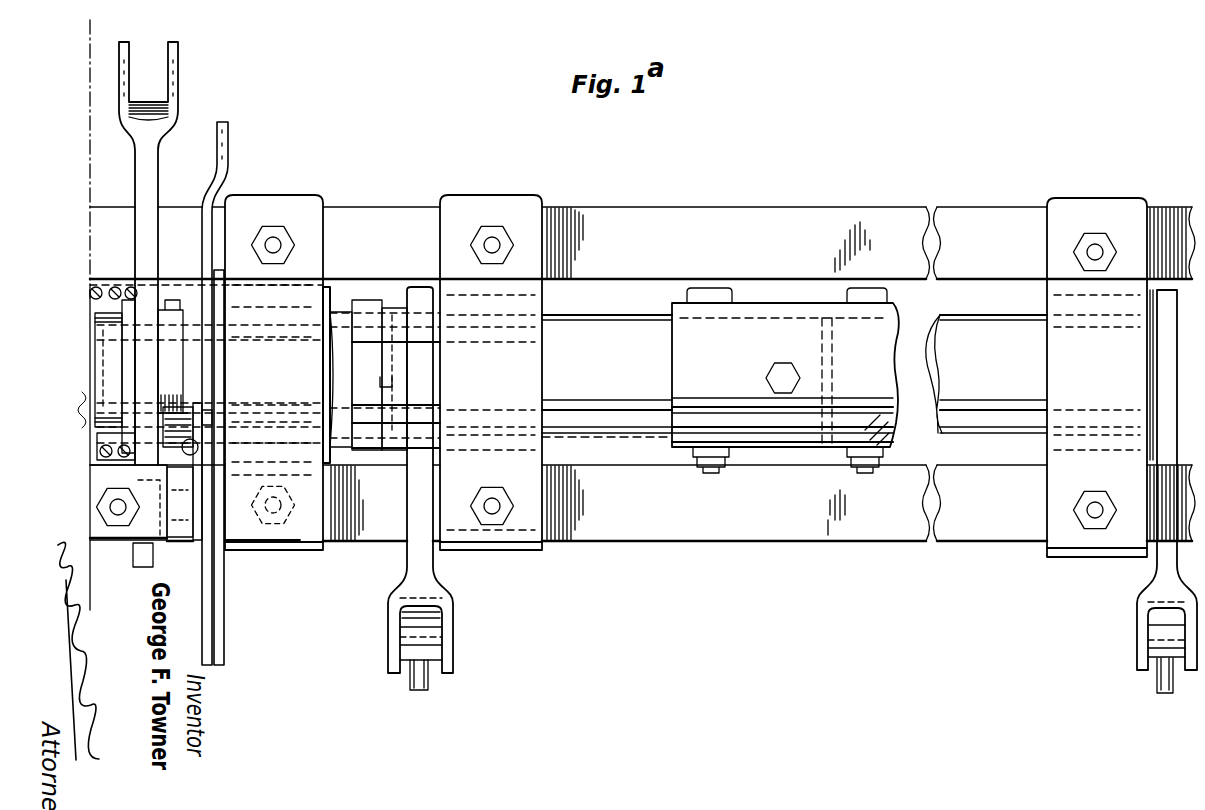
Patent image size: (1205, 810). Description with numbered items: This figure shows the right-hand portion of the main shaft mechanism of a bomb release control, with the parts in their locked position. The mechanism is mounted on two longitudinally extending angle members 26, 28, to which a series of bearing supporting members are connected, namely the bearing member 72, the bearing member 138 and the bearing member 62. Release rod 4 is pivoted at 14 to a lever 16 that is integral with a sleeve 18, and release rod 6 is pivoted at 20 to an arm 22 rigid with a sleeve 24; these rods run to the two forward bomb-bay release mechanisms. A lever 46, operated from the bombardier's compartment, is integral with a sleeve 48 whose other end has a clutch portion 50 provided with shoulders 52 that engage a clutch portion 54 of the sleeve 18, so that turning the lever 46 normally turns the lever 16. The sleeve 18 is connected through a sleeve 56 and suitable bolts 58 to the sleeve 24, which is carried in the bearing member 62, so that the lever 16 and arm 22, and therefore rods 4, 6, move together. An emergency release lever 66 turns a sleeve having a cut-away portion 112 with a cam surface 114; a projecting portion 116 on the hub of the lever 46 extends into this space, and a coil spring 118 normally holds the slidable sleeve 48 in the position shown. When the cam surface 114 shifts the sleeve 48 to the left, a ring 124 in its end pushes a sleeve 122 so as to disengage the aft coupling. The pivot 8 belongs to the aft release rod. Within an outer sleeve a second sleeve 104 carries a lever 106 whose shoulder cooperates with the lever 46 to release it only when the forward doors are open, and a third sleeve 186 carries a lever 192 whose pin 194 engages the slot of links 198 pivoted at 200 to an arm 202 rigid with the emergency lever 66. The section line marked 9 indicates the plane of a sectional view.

The release rod 4 is at (418, 678).
The release rod 6 is at (1158, 682).
The pivot 8 is at (275, 381).
The section line 9 is at (495, 381).
The pivot 14 is at (447, 642).
The lever 16 is at (415, 558).
The sleeve 18 is at (613, 333).
The pivot 20 is at (1148, 650).
The arm 22 is at (1160, 580).
The sleeve 24 is at (978, 343).
The angle member 26 is at (600, 218).
The angle member 28 is at (893, 539).
The lever 46 is at (141, 192).
The sleeve 48 is at (347, 445).
The clutch portion 50 is at (368, 305).
The shoulders 52 is at (390, 380).
The clutch portion 54 is at (393, 308).
The sleeve 56 is at (755, 333).
The bolts 58 is at (853, 478).
The bearing member 62 is at (1058, 444).
The emergency release lever 66 is at (222, 168).
The bearing member 72 is at (325, 280).
The second sleeve 104 is at (100, 480).
The lever 106 is at (133, 557).
The cut-away portion 112 is at (173, 355).
The cam surface 114 is at (190, 408).
The projecting portion 116 is at (97, 433).
The coil spring 118 is at (90, 293).
The sleeve 122 is at (93, 358).
The ring 124 is at (97, 325).
The bearing member 138 is at (523, 383).
The third sleeve 186 is at (182, 542).
The lever 192 is at (230, 543).
The pin 194 is at (227, 502).
The links 198 is at (223, 625).
The pivot 200 is at (225, 435).
The arm 202 is at (210, 417).